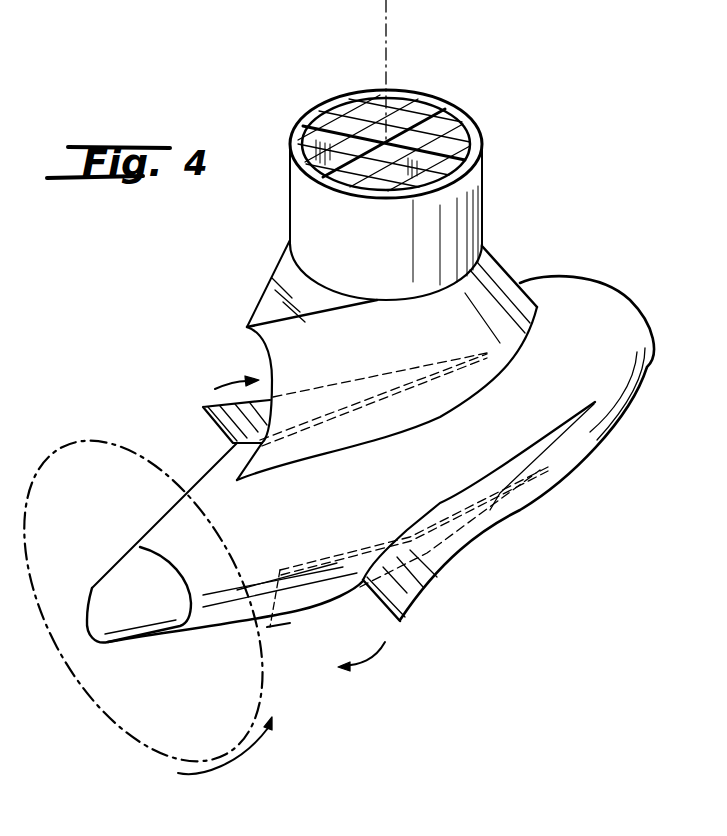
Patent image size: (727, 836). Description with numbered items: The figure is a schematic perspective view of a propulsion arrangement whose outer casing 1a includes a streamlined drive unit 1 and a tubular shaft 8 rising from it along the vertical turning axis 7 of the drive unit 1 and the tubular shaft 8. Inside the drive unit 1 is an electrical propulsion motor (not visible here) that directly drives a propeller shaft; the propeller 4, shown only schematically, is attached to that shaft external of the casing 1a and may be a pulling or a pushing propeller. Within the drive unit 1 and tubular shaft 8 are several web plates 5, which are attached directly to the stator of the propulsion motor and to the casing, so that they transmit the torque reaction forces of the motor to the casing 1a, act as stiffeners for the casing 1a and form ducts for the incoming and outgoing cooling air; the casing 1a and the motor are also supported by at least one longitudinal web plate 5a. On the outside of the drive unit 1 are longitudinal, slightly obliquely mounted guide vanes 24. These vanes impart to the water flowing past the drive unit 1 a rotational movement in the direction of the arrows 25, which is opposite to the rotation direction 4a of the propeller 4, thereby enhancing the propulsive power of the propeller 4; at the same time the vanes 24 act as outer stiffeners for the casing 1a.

The drive unit 1 is at (576, 518).
The outer casing 1a is at (583, 293).
The propeller 4 is at (53, 447).
The rotation direction of the propeller 4a is at (245, 768).
The web plates 5 is at (381, 115).
The longitudinal web plate 5a is at (428, 112).
The vertical turning axis 7 is at (388, 13).
The tubular shaft 8 is at (471, 210).
The guide vanes 24 is at (203, 418).
The arrows indicating rotational movement direction 25 is at (218, 386).